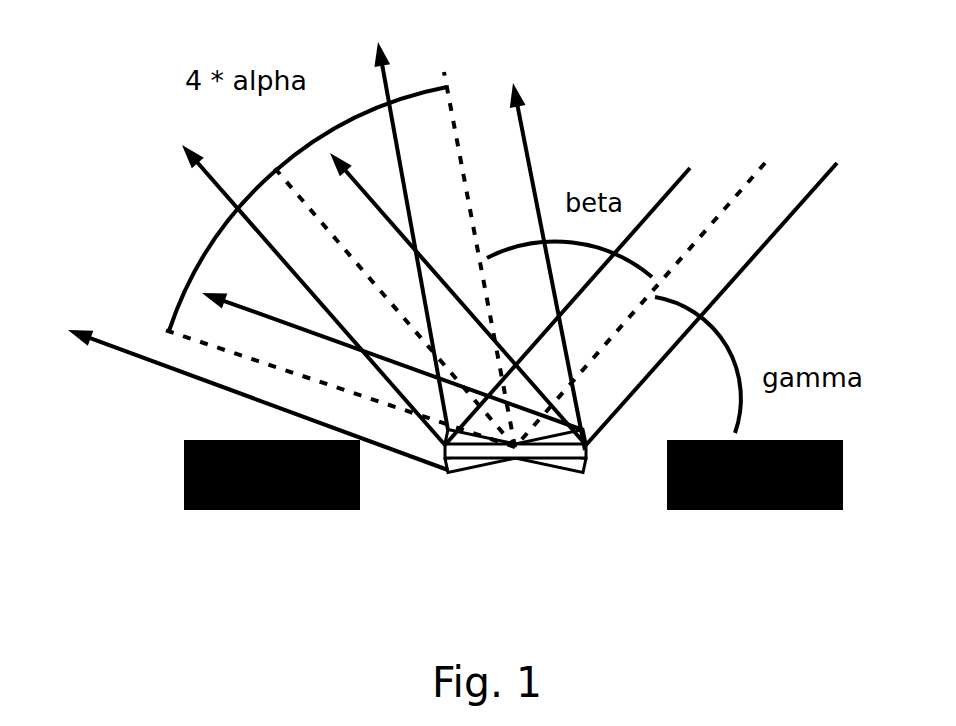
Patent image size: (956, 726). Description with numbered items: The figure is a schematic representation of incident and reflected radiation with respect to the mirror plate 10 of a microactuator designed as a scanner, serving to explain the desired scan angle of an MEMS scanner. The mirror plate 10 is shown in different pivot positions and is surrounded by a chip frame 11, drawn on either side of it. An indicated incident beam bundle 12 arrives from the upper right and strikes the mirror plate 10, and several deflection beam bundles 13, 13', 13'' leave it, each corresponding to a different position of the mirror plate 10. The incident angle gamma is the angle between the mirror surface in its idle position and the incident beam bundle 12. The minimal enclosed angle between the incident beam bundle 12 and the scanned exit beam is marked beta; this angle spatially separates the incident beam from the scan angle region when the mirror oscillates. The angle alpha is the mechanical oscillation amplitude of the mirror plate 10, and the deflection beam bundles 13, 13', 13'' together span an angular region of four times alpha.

The mirror plate 10 is at (485, 450).
The chip frame 11 is at (693, 510).
The incident beam bundle 12 is at (670, 197).
The deflection beam bundle 13 is at (482, 246).
The deflection beam bundle 13' is at (384, 281).
The deflection beam bundle 13'' is at (325, 381).